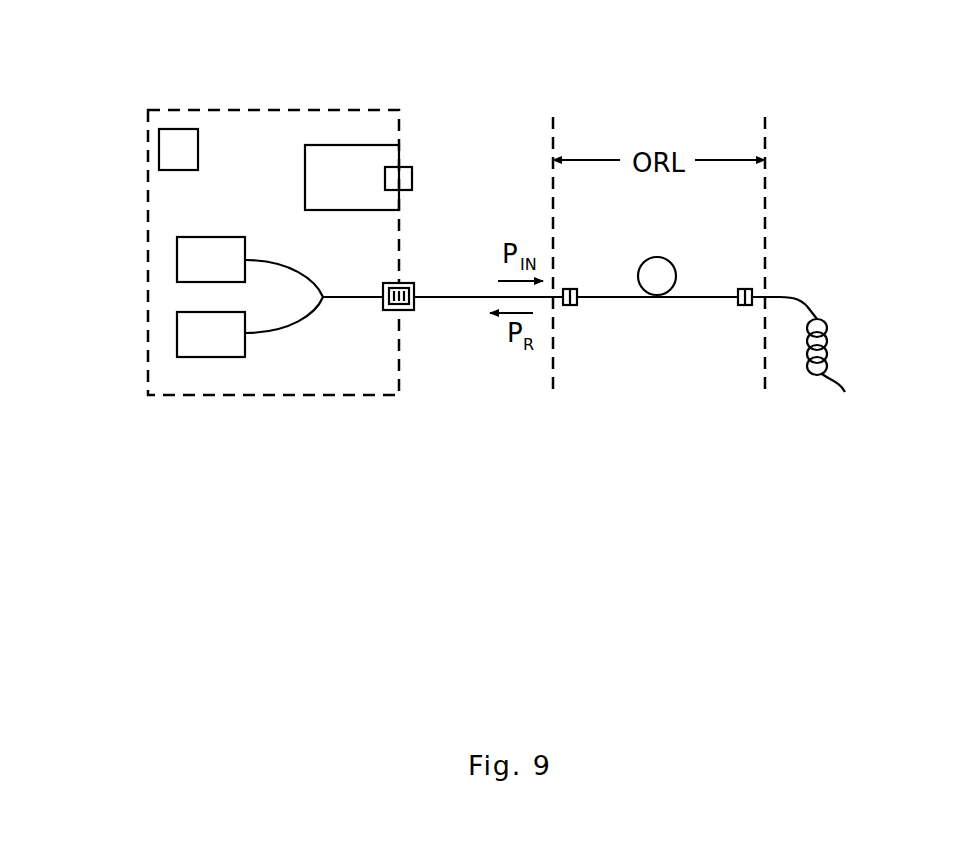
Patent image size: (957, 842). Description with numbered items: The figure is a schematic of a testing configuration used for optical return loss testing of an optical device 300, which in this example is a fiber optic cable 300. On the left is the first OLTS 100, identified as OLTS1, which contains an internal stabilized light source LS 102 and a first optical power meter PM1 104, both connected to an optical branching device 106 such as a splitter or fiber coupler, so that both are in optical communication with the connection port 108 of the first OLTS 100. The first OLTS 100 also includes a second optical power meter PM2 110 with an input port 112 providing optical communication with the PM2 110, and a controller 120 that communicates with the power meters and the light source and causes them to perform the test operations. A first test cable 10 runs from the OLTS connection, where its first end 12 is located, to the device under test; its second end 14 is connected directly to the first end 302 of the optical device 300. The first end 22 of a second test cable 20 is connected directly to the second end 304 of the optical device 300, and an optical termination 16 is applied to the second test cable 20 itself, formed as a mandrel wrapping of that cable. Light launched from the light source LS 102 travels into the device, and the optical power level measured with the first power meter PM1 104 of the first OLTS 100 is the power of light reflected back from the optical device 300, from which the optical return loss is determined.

The first OLTS 100 is at (333, 110).
The LS 102 is at (195, 345).
The PM1 104 is at (193, 245).
The optical branching device 106 is at (293, 262).
The connection port 108 is at (390, 305).
The PM2 110 is at (316, 163).
The input port 112 is at (413, 172).
The controller 120 is at (170, 152).
The first end of the first test cable 12 is at (410, 288).
The first test cable 10 is at (442, 298).
The second end of the first test cable 14 is at (568, 305).
The first end of the optical device 302 is at (572, 288).
The optical device 300 is at (667, 258).
The second end of the optical device 304 is at (739, 305).
The first end of the second test cable 22 is at (745, 294).
The second test cable 20 is at (805, 300).
The optical termination 16 is at (828, 378).